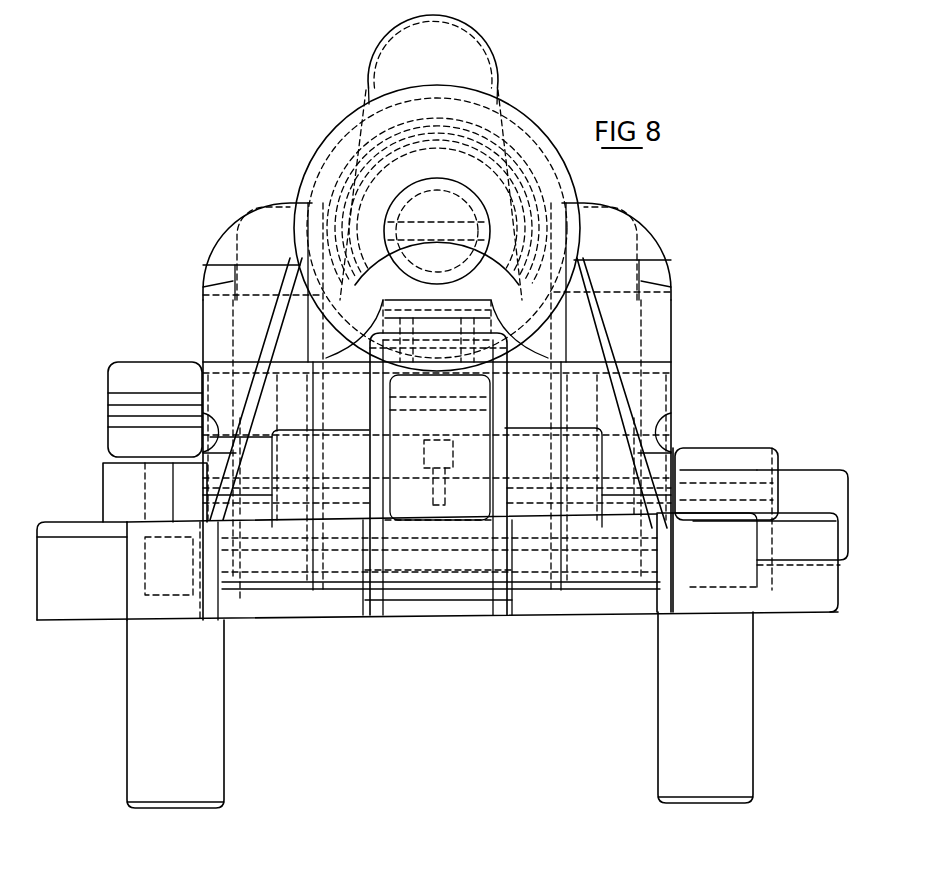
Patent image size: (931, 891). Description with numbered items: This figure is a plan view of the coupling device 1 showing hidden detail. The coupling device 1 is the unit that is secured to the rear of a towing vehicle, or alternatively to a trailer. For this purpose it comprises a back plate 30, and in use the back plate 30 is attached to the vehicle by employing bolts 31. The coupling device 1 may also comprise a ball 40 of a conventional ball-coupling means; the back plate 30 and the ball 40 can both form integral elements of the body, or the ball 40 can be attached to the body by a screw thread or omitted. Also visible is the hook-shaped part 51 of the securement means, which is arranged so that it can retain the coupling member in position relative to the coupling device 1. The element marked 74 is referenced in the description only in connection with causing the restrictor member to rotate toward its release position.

The coupling device 1 is at (703, 340).
The back plate 30 is at (800, 595).
The bolts 31 is at (680, 713).
The ball 40 is at (323, 172).
The hook-shaped part 51 is at (480, 58).
The nut 74 is at (138, 398).